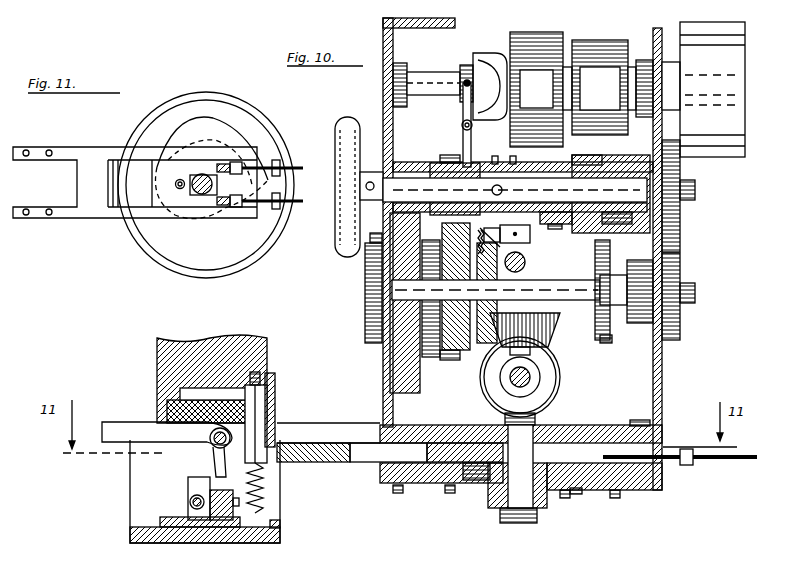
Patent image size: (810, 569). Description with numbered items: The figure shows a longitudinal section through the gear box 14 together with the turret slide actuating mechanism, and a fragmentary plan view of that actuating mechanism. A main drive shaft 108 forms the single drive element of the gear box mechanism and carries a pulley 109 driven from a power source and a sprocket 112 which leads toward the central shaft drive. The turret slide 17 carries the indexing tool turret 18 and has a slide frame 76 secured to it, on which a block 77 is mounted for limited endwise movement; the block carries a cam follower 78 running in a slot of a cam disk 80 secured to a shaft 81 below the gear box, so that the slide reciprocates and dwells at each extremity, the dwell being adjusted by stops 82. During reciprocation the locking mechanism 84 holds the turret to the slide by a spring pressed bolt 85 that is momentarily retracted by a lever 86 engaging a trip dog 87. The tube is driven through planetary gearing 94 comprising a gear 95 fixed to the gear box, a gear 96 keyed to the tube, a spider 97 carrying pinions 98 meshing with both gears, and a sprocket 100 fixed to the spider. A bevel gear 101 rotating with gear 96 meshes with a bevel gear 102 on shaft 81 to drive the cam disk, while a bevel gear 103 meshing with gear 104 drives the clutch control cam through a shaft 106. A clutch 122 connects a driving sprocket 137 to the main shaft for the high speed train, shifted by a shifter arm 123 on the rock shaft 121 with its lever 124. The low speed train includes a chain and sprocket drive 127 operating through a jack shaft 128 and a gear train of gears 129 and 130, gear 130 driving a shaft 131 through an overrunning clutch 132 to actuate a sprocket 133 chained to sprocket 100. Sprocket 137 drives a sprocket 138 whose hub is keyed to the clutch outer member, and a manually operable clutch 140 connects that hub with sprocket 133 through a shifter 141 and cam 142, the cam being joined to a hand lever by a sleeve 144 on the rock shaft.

In FIG. 10, the gear box 14 is at (664, 397).
In FIG. 10, the turret slide 17 is at (167, 412).
In FIG. 10, the indexing tool turret 18 is at (157, 351).
In FIG. 11, the slide frame 76 is at (77, 152).
In FIG. 10, the slide frame 76 is at (342, 464).
In FIG. 11, the block 77 is at (172, 203).
In FIG. 10, the block 77 is at (440, 464).
In FIG. 11, the cam follower 78 is at (174, 190).
In FIG. 10, the cam follower 78 is at (476, 481).
In FIG. 11, the cam disk 80 is at (260, 252).
In FIG. 10, the cam disk 80 is at (596, 484).
In FIG. 11, the shaft 81 is at (208, 178).
In FIG. 10, the shaft 81 is at (500, 512).
In FIG. 11, the stops 82 is at (277, 207).
In FIG. 10, the stops 82 is at (686, 466).
In FIG. 10, the locking mechanism 84 is at (168, 496).
In FIG. 10, the spring pressed bolt 85 is at (268, 404).
In FIG. 10, the lever 86 is at (214, 469).
In FIG. 10, the trip dog 87 is at (190, 487).
In FIG. 10, the planetary gearing 94 is at (438, 274).
In FIG. 10, the gear 95 is at (368, 336).
In FIG. 10, the gear 96 is at (395, 350).
In FIG. 10, the spider 97 is at (442, 385).
In FIG. 10, the pinions 98 is at (392, 378).
In FIG. 10, the sprocket 100 is at (458, 352).
In FIG. 10, the bevel gear 101 is at (498, 320).
In FIG. 10, the bevel gear 102 is at (552, 331).
In FIG. 10, the bevel gear 103 is at (555, 347).
In FIG. 10, the gear 104 is at (558, 377).
In FIG. 10, the shaft 106 is at (531, 380).
In FIG. 10, the shaft 108 is at (445, 78).
In FIG. 10, the pulley 109 is at (744, 82).
In FIG. 10, the sprocket 112 is at (617, 35).
In FIG. 10, the rock shaft 121 is at (525, 262).
In FIG. 10, the clutch 122 is at (507, 54).
In FIG. 10, the shifter arm 123 is at (426, 165).
In FIG. 10, the lever 124 is at (462, 129).
In FIG. 10, the chain and sprocket drive 127 is at (618, 342).
In FIG. 10, the jack shaft 128 is at (560, 281).
In FIG. 10, the gear 129 is at (680, 324).
In FIG. 10, the gear 130 is at (681, 233).
In FIG. 10, the shaft 131 is at (570, 162).
In FIG. 10, the overrunning clutch 132 is at (609, 231).
In FIG. 10, the sprocket 133 is at (455, 160).
In FIG. 10, the driving sprocket 137 is at (542, 32).
In FIG. 10, the sprocket 138 is at (556, 224).
In FIG. 10, the manually operable clutch 140 is at (500, 162).
In FIG. 10, the shifter 141 is at (530, 234).
In FIG. 10, the cam 142 is at (522, 252).
In FIG. 10, the sleeve 144 is at (522, 270).